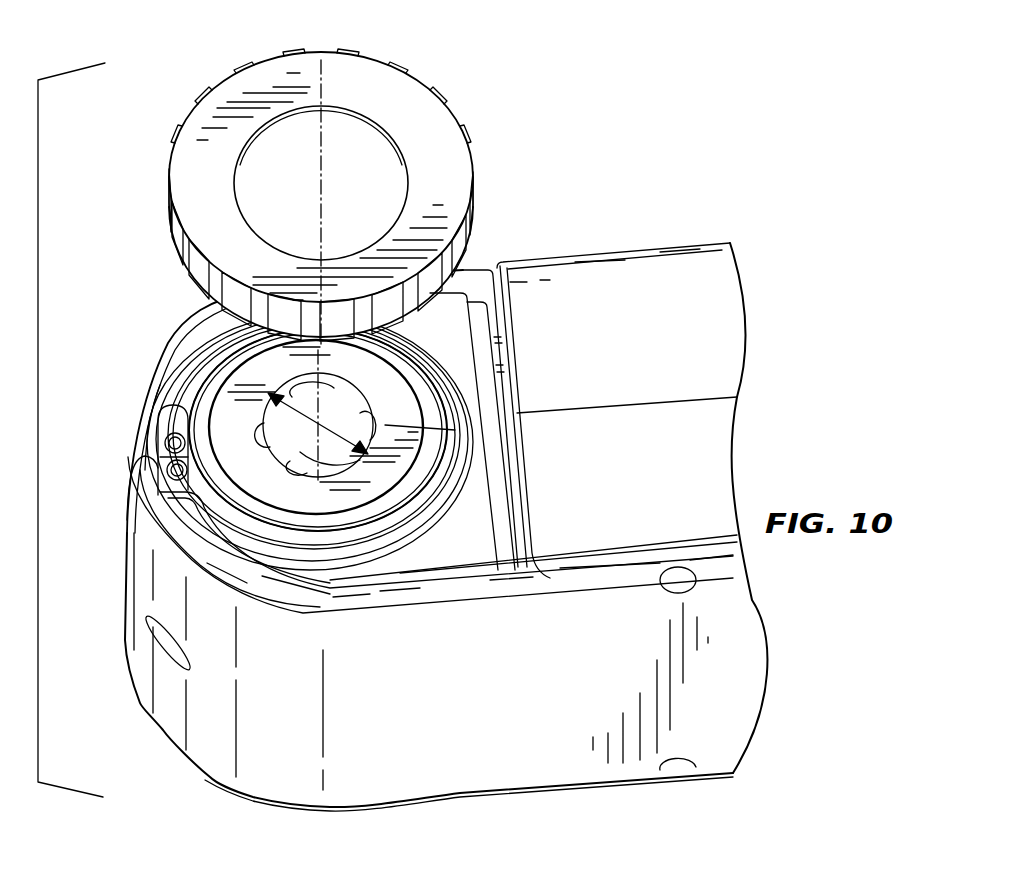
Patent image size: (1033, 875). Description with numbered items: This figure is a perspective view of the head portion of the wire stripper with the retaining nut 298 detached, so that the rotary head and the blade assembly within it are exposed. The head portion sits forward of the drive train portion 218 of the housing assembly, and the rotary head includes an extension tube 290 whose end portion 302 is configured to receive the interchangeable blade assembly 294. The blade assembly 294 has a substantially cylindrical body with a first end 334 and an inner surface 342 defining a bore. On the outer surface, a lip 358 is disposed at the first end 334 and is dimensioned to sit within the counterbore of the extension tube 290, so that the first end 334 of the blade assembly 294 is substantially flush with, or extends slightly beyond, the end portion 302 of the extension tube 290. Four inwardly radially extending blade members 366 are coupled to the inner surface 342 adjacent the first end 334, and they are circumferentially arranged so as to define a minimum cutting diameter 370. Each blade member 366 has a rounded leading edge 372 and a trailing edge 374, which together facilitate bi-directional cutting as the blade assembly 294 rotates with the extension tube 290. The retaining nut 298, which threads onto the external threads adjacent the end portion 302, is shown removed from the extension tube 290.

The drive train portion 218 is at (446, 527).
The extension tube 290 is at (462, 283).
The retaining nut 298 is at (427, 130).
The end portion 302 is at (247, 342).
The trailing edge 374 is at (300, 378).
The interchangeable blade assembly 294 is at (235, 415).
The first end 334 is at (318, 430).
The inner surface 342 is at (308, 450).
The lip 358 is at (233, 440).
The blade members 366 is at (385, 425).
The minimum cutting diameter 370 is at (338, 467).
The rounded leading edge 372 is at (368, 402).